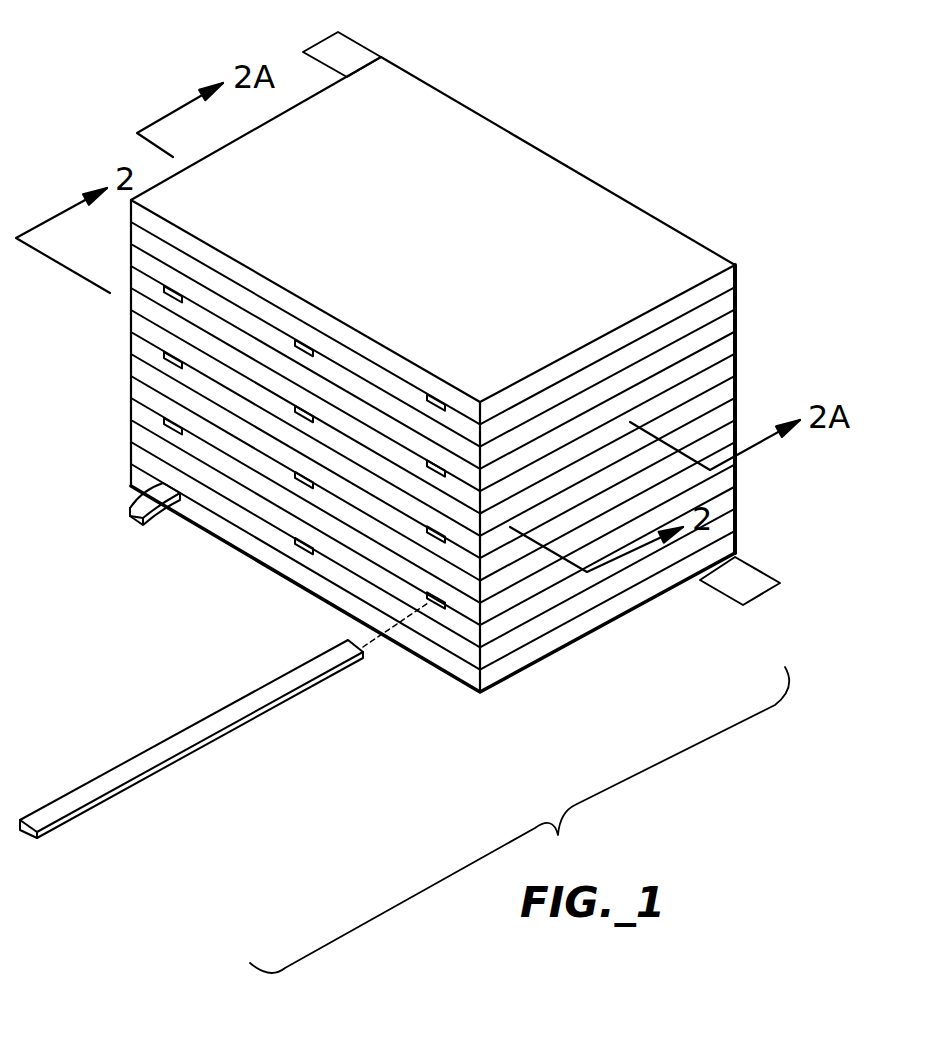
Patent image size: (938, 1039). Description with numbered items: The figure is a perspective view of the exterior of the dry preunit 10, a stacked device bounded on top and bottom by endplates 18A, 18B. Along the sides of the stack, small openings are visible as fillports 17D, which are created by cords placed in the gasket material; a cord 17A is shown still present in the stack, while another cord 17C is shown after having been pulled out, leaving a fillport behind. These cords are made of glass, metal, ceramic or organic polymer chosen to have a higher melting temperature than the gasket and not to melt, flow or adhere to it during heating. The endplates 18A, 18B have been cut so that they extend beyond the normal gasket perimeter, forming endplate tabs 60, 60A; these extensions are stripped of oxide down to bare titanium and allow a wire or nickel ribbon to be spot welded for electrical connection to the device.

The dry preunit 10 is at (421, 423).
The endplate 18A is at (512, 150).
The endplate 18B is at (542, 665).
The fillport 17D is at (170, 420).
The cord 17A is at (128, 507).
The cord 17C is at (163, 747).
The endplate tab 60 is at (350, 50).
The endplate tab 60A is at (752, 580).